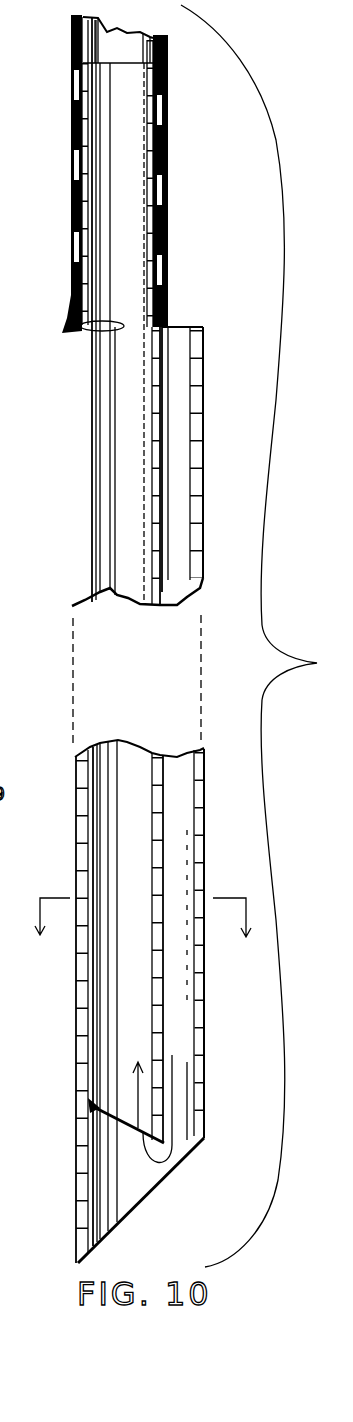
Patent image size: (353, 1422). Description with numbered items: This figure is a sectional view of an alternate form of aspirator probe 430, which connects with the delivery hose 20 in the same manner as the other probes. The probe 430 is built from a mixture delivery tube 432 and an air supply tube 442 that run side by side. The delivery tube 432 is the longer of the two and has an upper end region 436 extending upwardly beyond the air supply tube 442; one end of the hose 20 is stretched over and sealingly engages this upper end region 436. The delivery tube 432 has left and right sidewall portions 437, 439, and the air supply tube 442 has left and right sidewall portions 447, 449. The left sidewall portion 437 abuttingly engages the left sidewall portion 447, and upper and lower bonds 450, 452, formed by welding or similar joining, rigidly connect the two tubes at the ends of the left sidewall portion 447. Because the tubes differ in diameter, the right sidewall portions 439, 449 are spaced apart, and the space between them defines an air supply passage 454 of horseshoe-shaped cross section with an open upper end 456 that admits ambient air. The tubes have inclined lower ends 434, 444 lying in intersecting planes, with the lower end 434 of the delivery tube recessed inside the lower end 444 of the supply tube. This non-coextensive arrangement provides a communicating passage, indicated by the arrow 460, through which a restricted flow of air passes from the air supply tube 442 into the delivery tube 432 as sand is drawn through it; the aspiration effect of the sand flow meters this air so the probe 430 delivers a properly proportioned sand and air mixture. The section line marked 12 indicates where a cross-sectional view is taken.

The delivery hose 20 is at (70, 146).
The upper end region 436 is at (132, 146).
The open upper end 456 is at (175, 330).
The upper bond 450 is at (72, 330).
The mixture delivery tube 432 is at (103, 389).
The air supply tube 442 is at (207, 382).
The air supply passage 454 is at (175, 416).
The left sidewall portion of air supply tube 447 is at (72, 600).
The right sidewall portion of air supply tube 449 is at (203, 580).
The left sidewall portion of mixture delivery tube 437 is at (128, 586).
The right sidewall portion of mixture delivery tube 439 is at (140, 602).
The aspirator probe 430 is at (64, 629).
The section line 12- 12 is at (144, 927).
The lower bond 452 is at (90, 1105).
The lower end of delivery tube 434 is at (85, 1128).
The communicating passage 460 is at (173, 1117).
The lower end of air supply tube 444 is at (166, 1172).